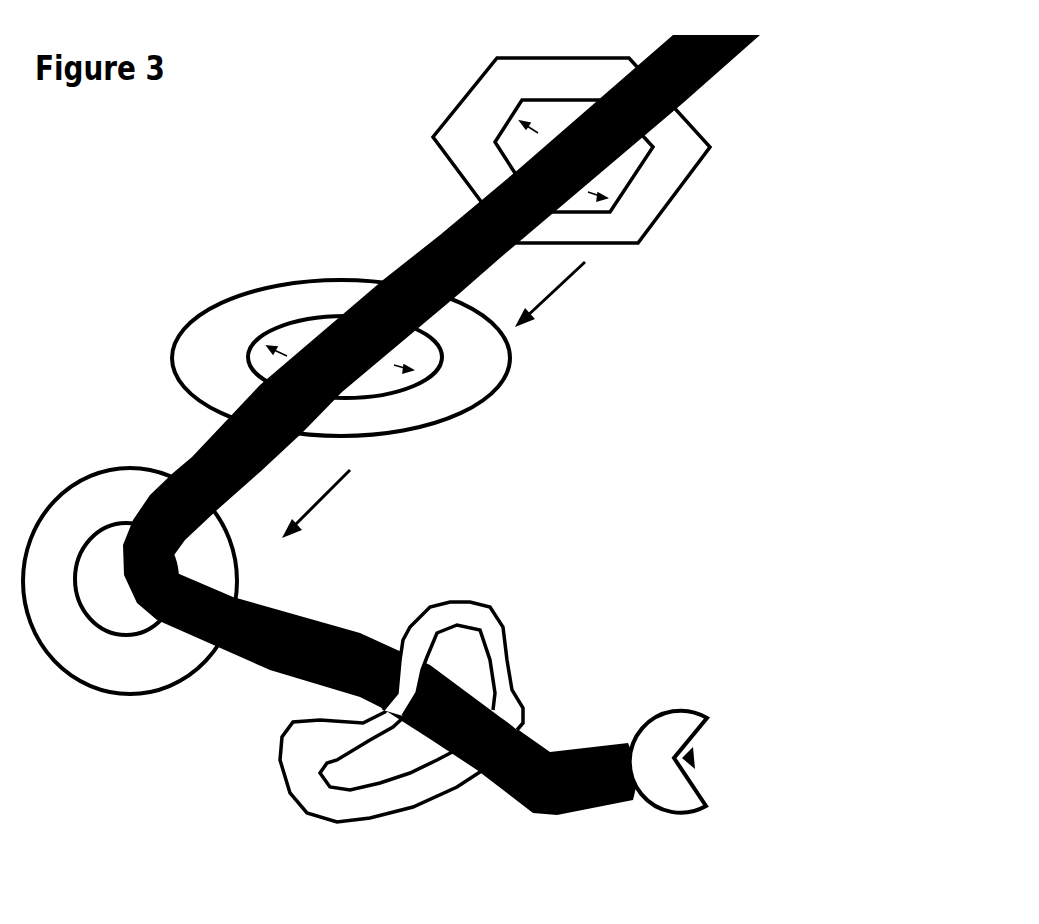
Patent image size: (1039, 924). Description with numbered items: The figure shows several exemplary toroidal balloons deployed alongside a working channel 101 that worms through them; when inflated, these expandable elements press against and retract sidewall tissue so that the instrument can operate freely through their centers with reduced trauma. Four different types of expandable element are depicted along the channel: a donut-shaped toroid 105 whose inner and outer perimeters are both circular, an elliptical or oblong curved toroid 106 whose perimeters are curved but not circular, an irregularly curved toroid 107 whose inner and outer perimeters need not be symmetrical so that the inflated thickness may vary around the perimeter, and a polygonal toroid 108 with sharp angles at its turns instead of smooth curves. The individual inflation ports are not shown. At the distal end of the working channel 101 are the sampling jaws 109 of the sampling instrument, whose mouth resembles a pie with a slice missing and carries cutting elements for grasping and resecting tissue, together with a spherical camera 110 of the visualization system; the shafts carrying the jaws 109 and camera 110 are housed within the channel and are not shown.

The working channel 101 is at (435, 235).
The donut-shaped toroid 105 is at (123, 566).
The elliptical or oblong curved toroid 106 is at (341, 341).
The irregularly curved toroid 107 is at (401, 688).
The polygonal toroid 108 is at (571, 125).
The sampling jaws 109 is at (668, 710).
The camera 110 is at (695, 760).